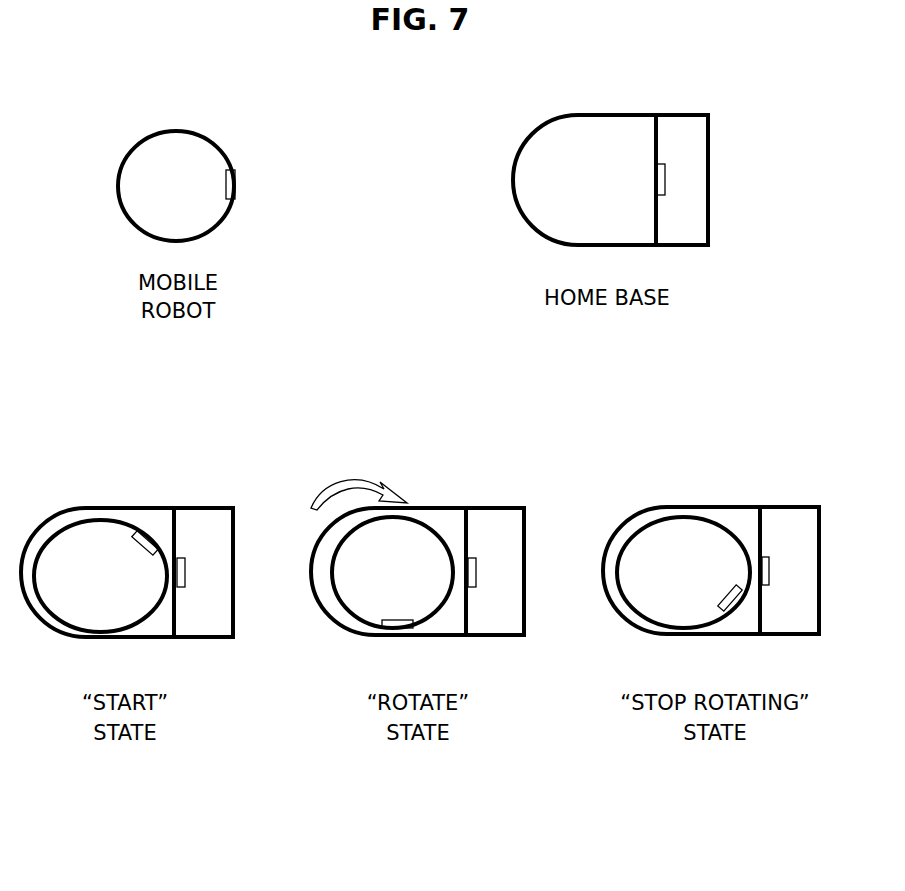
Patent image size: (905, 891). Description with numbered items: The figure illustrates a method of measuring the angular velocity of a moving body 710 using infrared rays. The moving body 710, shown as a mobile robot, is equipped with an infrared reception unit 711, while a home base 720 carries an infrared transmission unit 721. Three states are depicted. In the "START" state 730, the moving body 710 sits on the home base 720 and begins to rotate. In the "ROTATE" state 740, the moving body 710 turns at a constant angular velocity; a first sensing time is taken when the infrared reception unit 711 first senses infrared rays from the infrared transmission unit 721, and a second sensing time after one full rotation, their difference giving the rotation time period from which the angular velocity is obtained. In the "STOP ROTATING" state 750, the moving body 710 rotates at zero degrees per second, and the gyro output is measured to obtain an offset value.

The moving body 710 is at (205, 128).
The infrared reception unit 711 is at (238, 173).
The home base 720 is at (660, 98).
The infrared transmission unit 721 is at (668, 168).
The "START" state 730 is at (123, 482).
The "ROTATE" state 740 is at (425, 488).
The "STOP ROTATING" state 750 is at (713, 482).